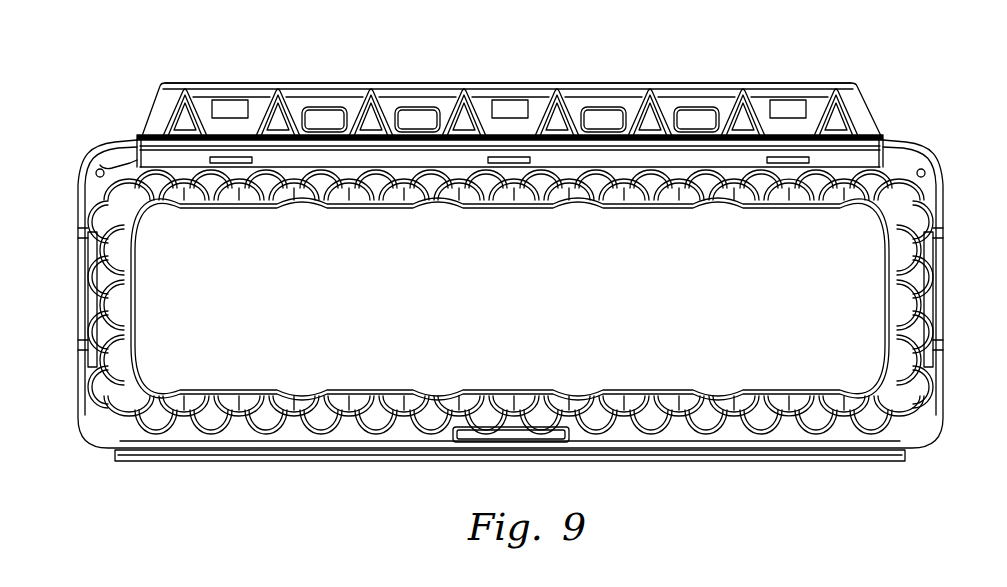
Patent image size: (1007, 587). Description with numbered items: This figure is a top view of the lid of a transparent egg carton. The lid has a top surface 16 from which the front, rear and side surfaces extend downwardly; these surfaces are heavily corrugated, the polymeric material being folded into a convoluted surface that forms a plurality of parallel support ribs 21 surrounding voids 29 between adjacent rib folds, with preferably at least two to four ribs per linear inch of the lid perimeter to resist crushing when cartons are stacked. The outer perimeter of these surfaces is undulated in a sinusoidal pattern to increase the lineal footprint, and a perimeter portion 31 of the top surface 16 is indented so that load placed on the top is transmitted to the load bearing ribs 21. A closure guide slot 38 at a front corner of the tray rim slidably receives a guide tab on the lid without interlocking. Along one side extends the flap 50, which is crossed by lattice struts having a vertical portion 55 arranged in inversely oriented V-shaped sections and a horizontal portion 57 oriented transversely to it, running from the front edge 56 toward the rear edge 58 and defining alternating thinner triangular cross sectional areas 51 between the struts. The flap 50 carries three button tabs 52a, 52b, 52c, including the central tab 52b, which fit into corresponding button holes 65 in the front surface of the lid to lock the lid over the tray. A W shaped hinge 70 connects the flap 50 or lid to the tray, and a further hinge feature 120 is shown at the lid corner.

The top surface 16 is at (504, 320).
The support ribs 21 is at (355, 410).
The voids 29 is at (328, 410).
The perimeter portion 31 is at (823, 395).
The closure guide slot 38 is at (928, 165).
The flap 50 is at (823, 85).
The triangular cross sectional areas 51 is at (320, 122).
The button tab 52a is at (233, 107).
The button tab 52b is at (513, 107).
The button tab 52c is at (789, 108).
The vertical portion 55 is at (412, 122).
The front edge 56 is at (860, 85).
The horizontal portion 57 is at (352, 118).
The rear edge 58 is at (892, 142).
The button holes 65 is at (233, 164).
The W shaped hinge 70 is at (815, 462).
The hinge connection 120 is at (135, 145).